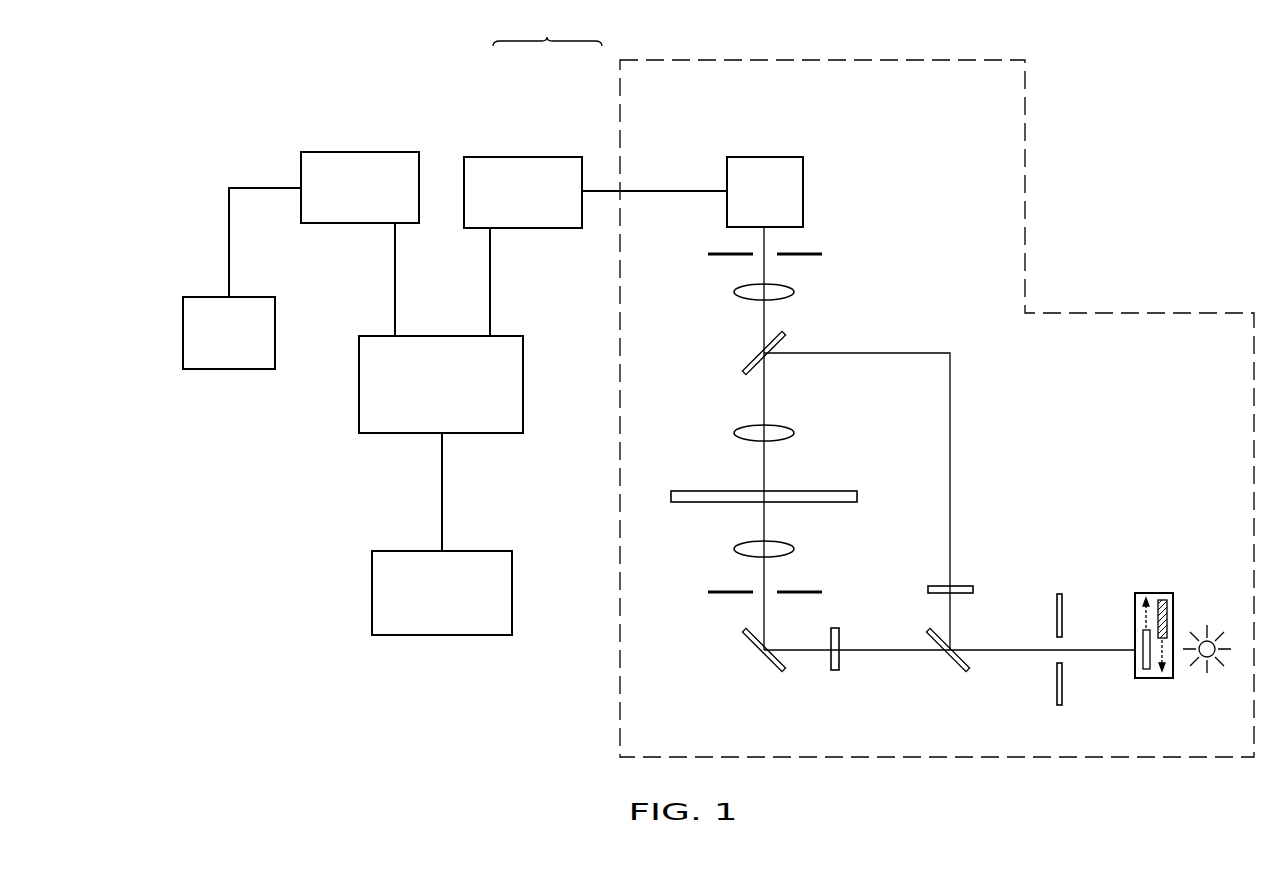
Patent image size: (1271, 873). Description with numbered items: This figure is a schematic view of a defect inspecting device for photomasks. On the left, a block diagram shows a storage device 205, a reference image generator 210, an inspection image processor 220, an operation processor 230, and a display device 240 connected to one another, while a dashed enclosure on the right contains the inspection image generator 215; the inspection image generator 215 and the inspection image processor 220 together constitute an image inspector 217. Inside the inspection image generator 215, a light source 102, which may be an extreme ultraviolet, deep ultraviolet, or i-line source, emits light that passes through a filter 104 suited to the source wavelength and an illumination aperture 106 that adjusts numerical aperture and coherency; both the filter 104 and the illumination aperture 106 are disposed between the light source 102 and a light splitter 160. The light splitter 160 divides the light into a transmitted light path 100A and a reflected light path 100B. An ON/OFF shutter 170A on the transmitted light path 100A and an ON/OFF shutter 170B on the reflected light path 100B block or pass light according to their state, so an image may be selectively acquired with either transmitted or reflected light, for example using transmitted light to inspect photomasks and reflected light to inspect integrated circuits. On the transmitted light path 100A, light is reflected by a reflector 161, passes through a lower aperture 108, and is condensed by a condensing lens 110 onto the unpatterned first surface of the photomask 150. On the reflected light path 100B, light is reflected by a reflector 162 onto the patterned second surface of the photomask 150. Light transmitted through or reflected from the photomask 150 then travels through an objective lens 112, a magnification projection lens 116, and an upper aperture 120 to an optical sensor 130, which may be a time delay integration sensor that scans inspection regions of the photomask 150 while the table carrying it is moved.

The light source 102 is at (1206, 628).
The filter 104 is at (1154, 593).
The illumination aperture 106 is at (1064, 605).
The lower aperture 108 is at (718, 591).
The condensing lens 110 is at (795, 549).
The objective lens 112 is at (795, 432).
The magnification projection lens 116 is at (795, 292).
The upper aperture 120 is at (822, 254).
The optical sensor 130 is at (765, 157).
The photomask 150 is at (698, 491).
The light splitter 160 is at (952, 648).
The reflector 161 is at (772, 665).
The reflector 162 is at (755, 356).
The ON/OFF shutter 170A is at (834, 670).
The ON/OFF shutter 170B is at (960, 585).
The transmitted light path 100A is at (891, 650).
The reflected light path 100B is at (951, 422).
The storage device 205 is at (228, 369).
The reference image generator 210 is at (370, 152).
The inspection image generator 215 is at (620, 128).
The image inspector 217 is at (547, 27).
The inspection image processor 220 is at (500, 157).
The operation processor 230 is at (395, 433).
The display device 240 is at (442, 635).